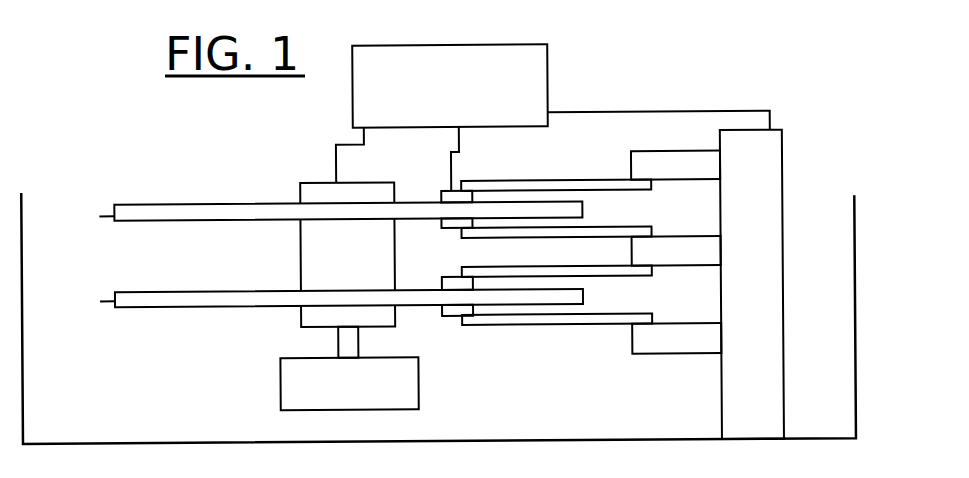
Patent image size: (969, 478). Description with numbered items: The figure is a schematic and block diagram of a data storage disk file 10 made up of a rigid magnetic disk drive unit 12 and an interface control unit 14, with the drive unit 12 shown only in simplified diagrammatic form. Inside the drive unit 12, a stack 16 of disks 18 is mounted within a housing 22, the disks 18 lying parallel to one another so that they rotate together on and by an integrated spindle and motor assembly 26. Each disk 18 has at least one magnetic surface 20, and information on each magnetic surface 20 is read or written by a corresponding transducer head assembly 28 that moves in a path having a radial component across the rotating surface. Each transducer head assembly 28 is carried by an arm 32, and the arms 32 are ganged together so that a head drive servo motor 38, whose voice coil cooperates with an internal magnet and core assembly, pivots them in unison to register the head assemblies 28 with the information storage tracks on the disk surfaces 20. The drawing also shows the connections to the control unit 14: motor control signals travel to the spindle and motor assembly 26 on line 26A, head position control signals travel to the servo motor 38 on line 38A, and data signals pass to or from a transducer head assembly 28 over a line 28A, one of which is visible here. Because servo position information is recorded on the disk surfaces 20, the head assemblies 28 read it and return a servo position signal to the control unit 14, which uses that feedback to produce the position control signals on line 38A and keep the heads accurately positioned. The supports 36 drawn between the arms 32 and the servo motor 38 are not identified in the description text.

The data storage disk file 10 is at (697, 106).
The rigid magnetic disk drive unit 12 is at (496, 380).
The interface control unit 14 is at (450, 85).
The stack 16 is at (266, 178).
The disk 18 is at (89, 262).
The magnetic surface 20 is at (210, 202).
The housing 22 is at (855, 314).
The integrated spindle and motor assembly 26 is at (349, 296).
The line 26A is at (331, 155).
The transducer head assembly 28 is at (442, 191).
The line 28A is at (444, 159).
The arm 32 is at (538, 180).
The electrode support 36 is at (695, 182).
The head drive servo motor 38 is at (752, 284).
The line 38A is at (659, 111).